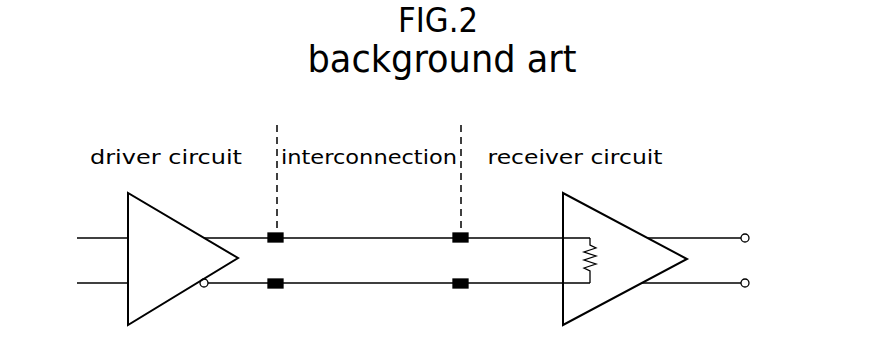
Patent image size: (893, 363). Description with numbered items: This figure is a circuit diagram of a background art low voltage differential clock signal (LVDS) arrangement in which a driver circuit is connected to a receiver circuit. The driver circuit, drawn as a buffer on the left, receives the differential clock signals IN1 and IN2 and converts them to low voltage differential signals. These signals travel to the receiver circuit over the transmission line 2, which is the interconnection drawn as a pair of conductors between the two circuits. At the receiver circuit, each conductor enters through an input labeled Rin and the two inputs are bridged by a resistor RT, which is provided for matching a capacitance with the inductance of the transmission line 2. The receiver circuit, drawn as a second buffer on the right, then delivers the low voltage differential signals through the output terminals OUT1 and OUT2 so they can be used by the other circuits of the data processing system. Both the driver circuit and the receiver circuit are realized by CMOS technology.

The transmission line 2 is at (363, 238).
The differential clock signal IN1 is at (82, 238).
The differential clock signal IN2 is at (82, 283).
The output terminal OUT1 is at (728, 238).
The output terminal OUT2 is at (725, 284).
The receiver input line Rin is at (529, 251).
The resistor RT is at (604, 260).